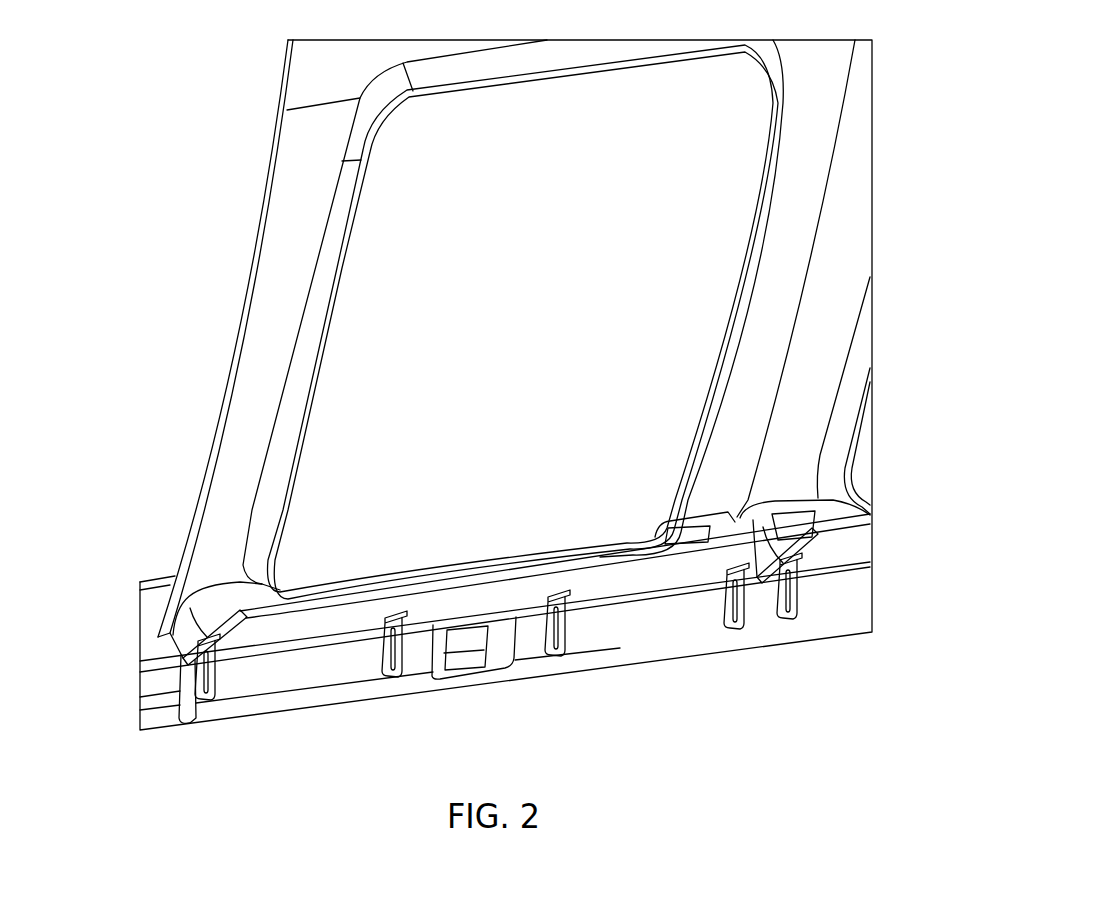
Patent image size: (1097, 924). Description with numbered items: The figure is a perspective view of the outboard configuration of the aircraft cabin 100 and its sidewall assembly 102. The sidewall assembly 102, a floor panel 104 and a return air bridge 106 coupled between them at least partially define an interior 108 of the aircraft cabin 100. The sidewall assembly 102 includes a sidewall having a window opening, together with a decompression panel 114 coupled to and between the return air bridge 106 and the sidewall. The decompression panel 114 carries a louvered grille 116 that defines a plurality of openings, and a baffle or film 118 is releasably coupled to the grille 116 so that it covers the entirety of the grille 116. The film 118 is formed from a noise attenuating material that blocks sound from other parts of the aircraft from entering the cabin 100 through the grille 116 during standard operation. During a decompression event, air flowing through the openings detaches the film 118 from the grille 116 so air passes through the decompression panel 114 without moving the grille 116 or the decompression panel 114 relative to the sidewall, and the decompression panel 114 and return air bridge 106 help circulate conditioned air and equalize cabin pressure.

The aircraft cabin 100 is at (226, 64).
The sidewall assembly 102 is at (180, 349).
The floor panel 104 is at (153, 718).
The return air bridge 106 is at (657, 576).
The interior 108 is at (184, 161).
The decompression panel 114 is at (296, 211).
The grille 116 is at (335, 420).
The film 118 is at (370, 313).